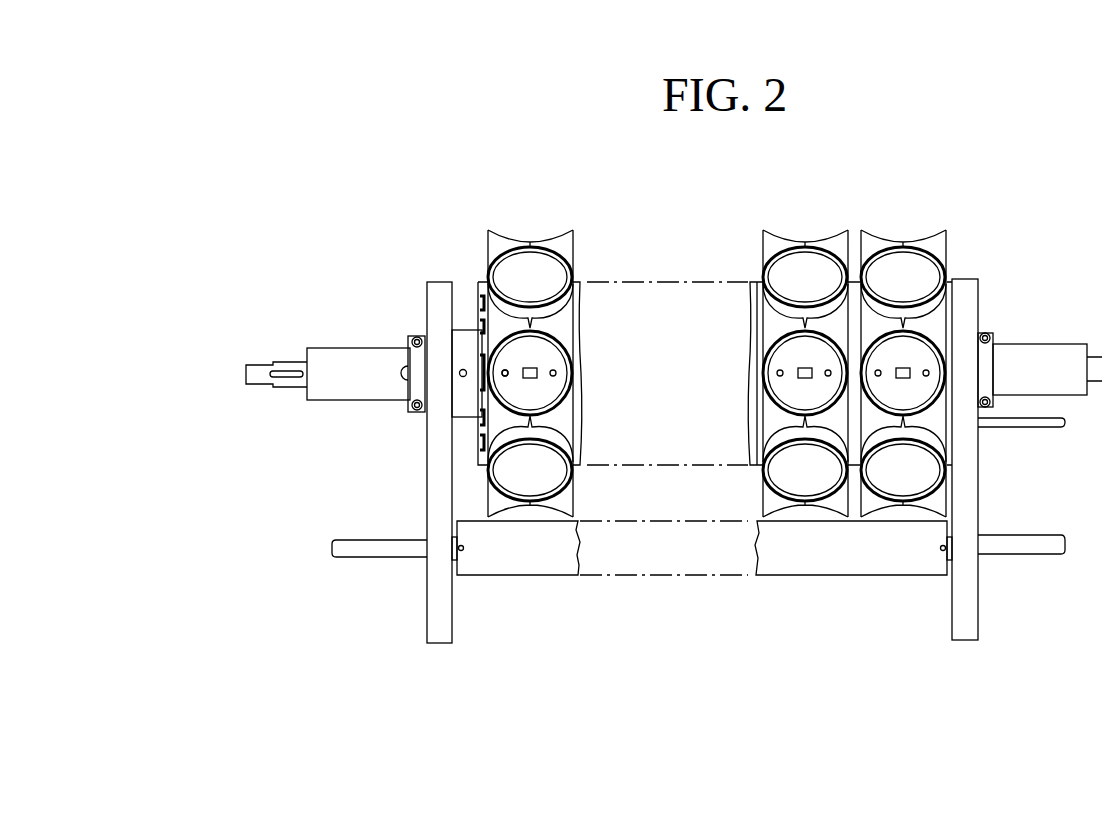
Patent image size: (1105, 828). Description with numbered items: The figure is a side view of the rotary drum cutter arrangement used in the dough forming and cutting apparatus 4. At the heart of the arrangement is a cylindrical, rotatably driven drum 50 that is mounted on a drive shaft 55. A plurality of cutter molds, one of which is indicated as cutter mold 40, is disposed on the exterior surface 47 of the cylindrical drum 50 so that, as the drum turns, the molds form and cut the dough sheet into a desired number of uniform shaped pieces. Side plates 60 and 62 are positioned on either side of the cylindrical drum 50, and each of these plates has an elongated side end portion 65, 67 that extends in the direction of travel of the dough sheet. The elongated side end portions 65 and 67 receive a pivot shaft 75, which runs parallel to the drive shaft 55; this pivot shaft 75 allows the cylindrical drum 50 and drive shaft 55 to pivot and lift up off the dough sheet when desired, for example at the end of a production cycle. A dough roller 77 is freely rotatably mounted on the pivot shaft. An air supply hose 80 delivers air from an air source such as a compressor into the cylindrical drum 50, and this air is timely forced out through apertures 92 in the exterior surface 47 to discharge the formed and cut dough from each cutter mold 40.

The dough forming and cutting apparatus 4 is at (440, 232).
The cutter mold 40 is at (512, 244).
The exterior surface 47 is at (488, 325).
The cylindrical drum 50 is at (952, 280).
The drive shaft 55 is at (1034, 344).
The side plate 60 is at (426, 512).
The side plate 62 is at (979, 510).
The elongated side end portion 65 is at (426, 595).
The elongated side end portion 67 is at (978, 623).
The pivot shaft 75 is at (352, 556).
The dough roller 77 is at (527, 577).
The air supply hose 80 is at (1025, 428).
The aperture 92 is at (503, 377).